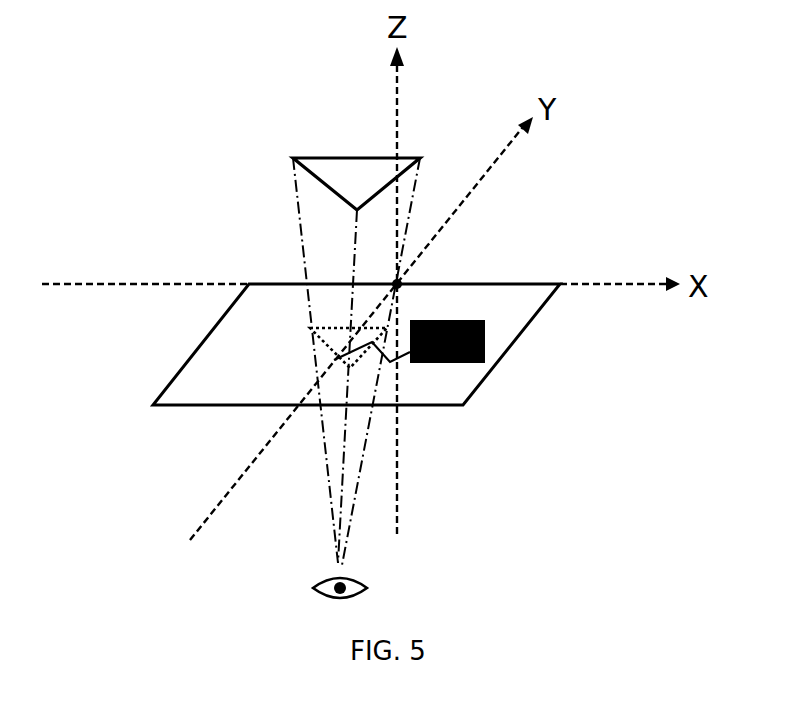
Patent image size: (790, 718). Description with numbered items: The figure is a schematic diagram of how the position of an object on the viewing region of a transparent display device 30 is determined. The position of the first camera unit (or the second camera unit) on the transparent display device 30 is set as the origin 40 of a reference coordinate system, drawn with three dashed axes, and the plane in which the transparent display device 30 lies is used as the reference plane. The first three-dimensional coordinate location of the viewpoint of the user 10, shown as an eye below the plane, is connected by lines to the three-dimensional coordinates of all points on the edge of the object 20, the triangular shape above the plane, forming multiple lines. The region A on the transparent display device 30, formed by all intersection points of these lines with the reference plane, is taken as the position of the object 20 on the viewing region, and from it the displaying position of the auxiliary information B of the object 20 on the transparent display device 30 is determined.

The user 10 is at (378, 589).
The object 20 is at (322, 158).
The transparent display device 30 is at (463, 405).
The origin 40 is at (397, 284).
The region A is at (330, 353).
The auxiliary information B is at (485, 345).